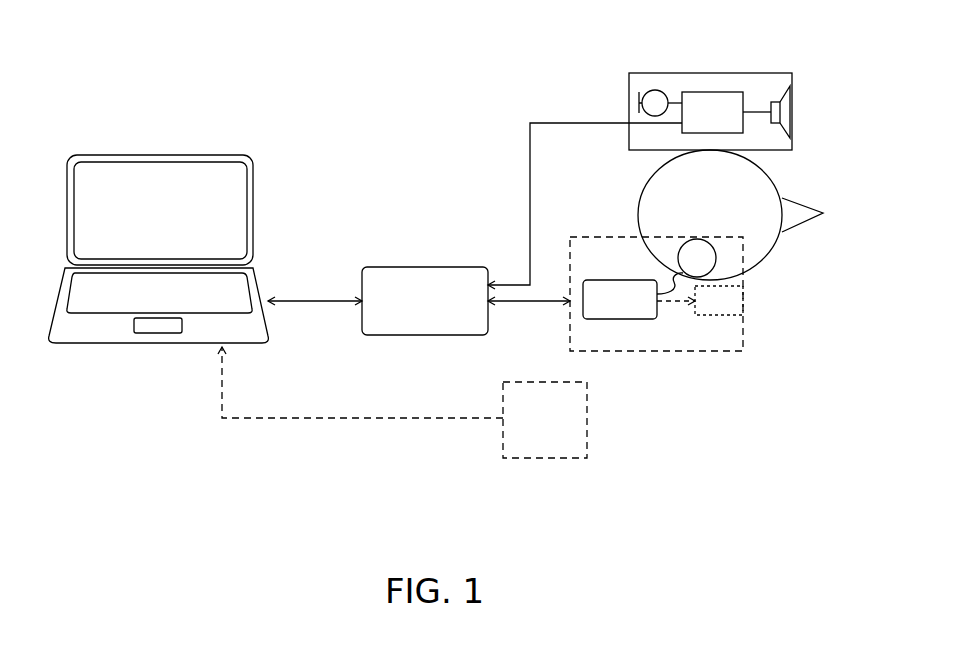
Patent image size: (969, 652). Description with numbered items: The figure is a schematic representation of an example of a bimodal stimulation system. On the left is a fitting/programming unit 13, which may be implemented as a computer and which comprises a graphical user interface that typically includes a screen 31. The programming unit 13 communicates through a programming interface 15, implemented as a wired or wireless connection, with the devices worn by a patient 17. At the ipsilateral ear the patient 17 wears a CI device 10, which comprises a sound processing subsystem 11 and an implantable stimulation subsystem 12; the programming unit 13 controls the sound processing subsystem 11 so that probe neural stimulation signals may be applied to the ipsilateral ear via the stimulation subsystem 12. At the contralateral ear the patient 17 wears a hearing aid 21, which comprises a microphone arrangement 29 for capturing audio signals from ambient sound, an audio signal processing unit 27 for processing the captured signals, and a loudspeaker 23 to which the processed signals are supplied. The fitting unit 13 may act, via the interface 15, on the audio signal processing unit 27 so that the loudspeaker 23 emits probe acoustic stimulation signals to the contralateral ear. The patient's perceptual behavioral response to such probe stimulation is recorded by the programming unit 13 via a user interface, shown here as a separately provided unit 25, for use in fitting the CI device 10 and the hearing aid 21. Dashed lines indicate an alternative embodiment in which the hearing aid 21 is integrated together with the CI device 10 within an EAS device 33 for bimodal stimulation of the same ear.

The fitting/programming unit 13 is at (184, 213).
The screen 31 is at (224, 183).
The programming interface 15 is at (422, 258).
The patient 17 is at (741, 193).
The implantable stimulation subsystem 12 is at (705, 258).
The hearing aid 21 is at (722, 301).
The loudspeaker 23 is at (788, 108).
The audio signal processing unit 27 is at (700, 105).
The microphone arrangement 29 is at (655, 90).
The user interface 25 is at (558, 432).
The EAS device 33 is at (717, 352).
The sound processing subsystem 11 is at (645, 314).
The CI device 10 is at (666, 306).